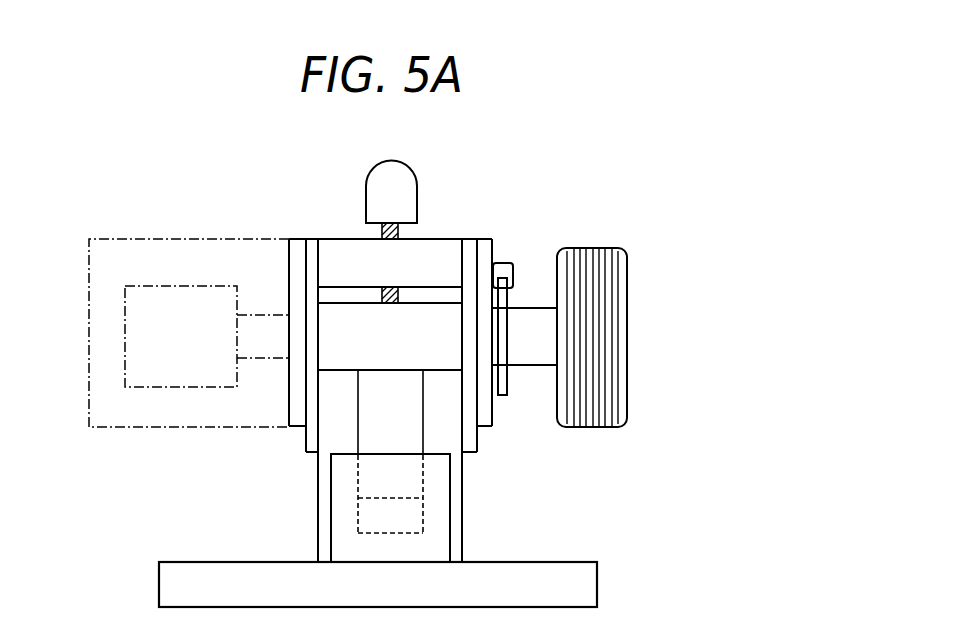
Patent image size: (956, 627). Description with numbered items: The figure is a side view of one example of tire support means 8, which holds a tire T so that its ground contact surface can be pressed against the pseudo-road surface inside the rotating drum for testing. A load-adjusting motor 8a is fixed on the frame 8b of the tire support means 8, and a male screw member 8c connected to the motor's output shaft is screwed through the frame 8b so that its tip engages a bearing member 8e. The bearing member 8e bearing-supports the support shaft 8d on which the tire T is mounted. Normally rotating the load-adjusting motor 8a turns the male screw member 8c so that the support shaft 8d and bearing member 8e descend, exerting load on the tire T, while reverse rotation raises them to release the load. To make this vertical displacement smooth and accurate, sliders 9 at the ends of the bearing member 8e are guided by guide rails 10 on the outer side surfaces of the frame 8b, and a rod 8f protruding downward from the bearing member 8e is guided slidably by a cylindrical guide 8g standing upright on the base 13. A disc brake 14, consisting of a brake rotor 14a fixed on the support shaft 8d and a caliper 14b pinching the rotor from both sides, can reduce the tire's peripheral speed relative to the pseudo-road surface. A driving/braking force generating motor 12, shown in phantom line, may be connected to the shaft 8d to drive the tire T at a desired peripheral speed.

The tire support means 8 is at (445, 228).
The load-adjusting motor 8a is at (380, 176).
The frame 8b is at (333, 238).
The male screw member 8c is at (381, 232).
The support shaft 8d is at (530, 341).
The bearing member 8e is at (342, 321).
The rod 8f is at (378, 420).
The cylindrical guide 8g is at (434, 514).
The sliders 9 is at (294, 392).
The guide rails 10 is at (309, 436).
The driving/braking force generating motor 12 is at (125, 340).
The base 13 is at (569, 584).
The disc brake 14 is at (543, 309).
The brake rotor 14a is at (507, 378).
The caliper 14b is at (500, 268).
The tire T is at (627, 298).